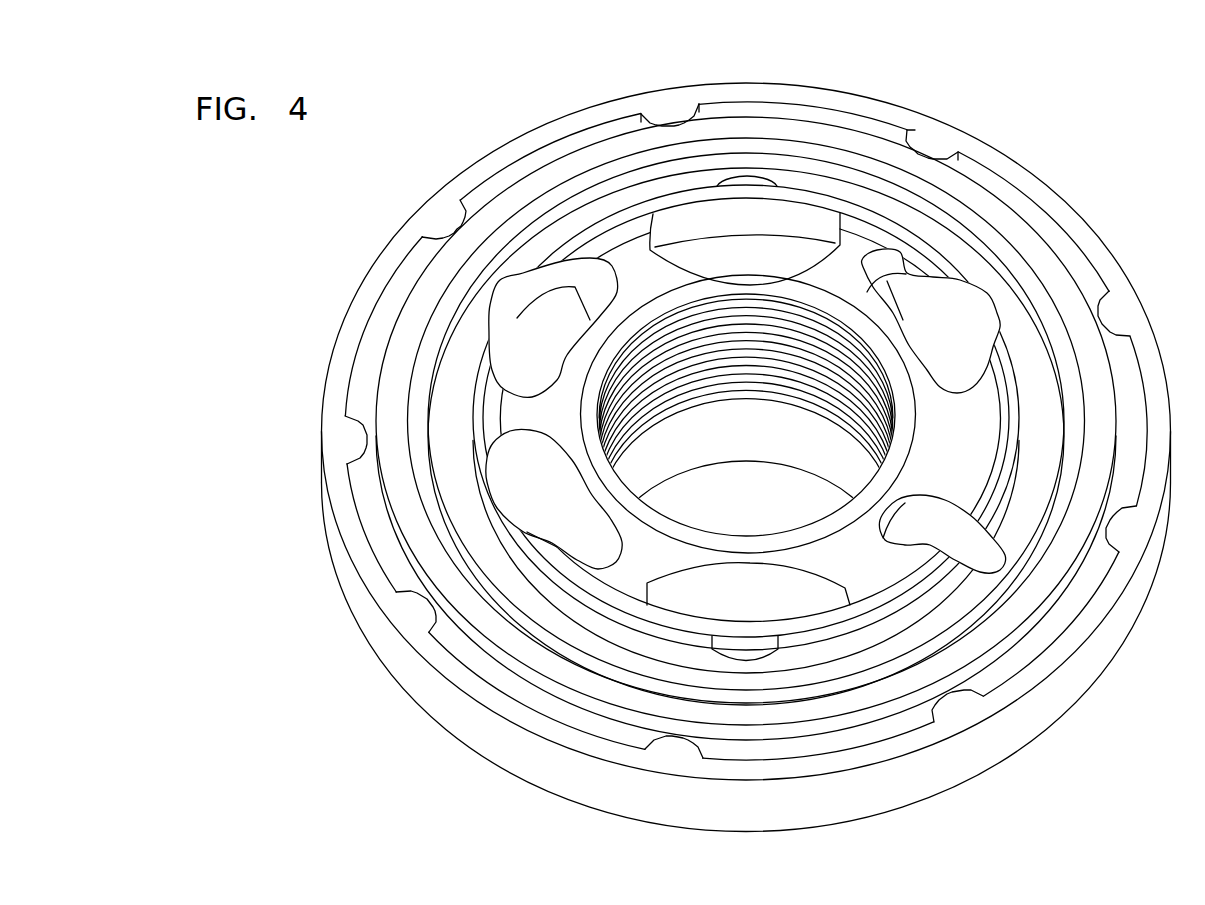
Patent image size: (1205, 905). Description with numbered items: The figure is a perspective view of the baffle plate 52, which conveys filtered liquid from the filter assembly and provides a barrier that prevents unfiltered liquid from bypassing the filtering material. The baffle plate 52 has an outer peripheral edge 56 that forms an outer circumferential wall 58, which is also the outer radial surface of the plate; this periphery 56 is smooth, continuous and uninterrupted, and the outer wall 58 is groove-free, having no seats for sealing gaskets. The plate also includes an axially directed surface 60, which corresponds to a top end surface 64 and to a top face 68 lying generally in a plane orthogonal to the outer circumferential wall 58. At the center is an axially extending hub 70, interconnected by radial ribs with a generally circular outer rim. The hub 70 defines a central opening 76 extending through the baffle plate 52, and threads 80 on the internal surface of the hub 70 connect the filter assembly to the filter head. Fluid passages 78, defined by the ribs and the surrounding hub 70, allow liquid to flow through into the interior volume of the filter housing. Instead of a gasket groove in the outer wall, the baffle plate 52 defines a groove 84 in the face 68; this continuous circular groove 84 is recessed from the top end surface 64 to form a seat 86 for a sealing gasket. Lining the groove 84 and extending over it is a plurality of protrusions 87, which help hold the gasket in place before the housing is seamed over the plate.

The baffle plate 52 is at (932, 65).
The outer peripheral edge 56 is at (1063, 690).
The outer circumferential wall 58 is at (1112, 630).
The axially directed surface 60 is at (1018, 270).
The top end surface 64 is at (1068, 288).
The top face 68 is at (565, 165).
The hub 70 is at (643, 480).
The central opening 76 is at (590, 418).
The fluid passages 78 is at (721, 569).
The threads 80 is at (747, 380).
The groove 84 is at (369, 317).
The seat 86 is at (380, 531).
The protrusions 87 is at (935, 147).